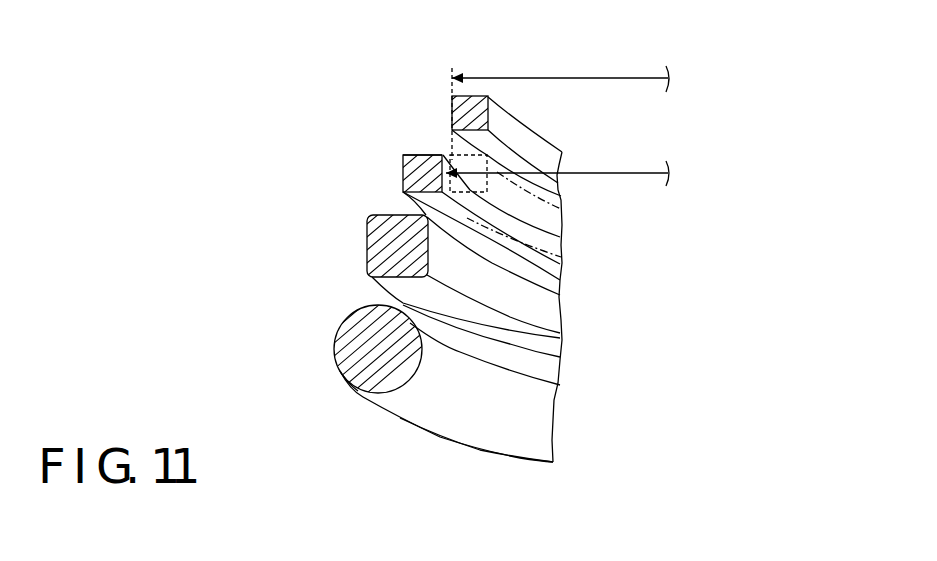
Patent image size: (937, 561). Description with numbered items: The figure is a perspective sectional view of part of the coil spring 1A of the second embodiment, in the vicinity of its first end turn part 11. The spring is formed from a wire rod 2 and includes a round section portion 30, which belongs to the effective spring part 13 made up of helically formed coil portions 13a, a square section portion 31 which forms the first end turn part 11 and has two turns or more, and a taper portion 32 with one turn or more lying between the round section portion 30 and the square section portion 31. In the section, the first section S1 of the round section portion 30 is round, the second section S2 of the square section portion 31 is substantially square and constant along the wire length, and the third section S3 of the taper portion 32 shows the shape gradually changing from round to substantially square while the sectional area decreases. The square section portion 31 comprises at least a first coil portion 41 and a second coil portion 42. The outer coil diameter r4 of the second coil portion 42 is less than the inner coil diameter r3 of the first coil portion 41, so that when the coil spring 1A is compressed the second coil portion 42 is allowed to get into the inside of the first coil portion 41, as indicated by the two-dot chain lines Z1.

The coil spring 1A is at (655, 219).
The wire rod 2 is at (373, 399).
The first end turn part 11 is at (529, 123).
The effective spring part 13 is at (421, 429).
The coil portions 13a is at (337, 370).
The round section portion 30 is at (545, 426).
The square section portion 31 is at (562, 206).
The taper portion 32 is at (540, 352).
The first coil portion 41 is at (402, 186).
The second coil portion 42 is at (452, 108).
The first section S1 is at (341, 325).
The second section S2 is at (402, 163).
The third section S3 is at (366, 252).
The two-dot chain lines Z1 is at (450, 150).
The inner coil diameter r3 is at (631, 173).
The outer coil diameter r4 is at (631, 78).